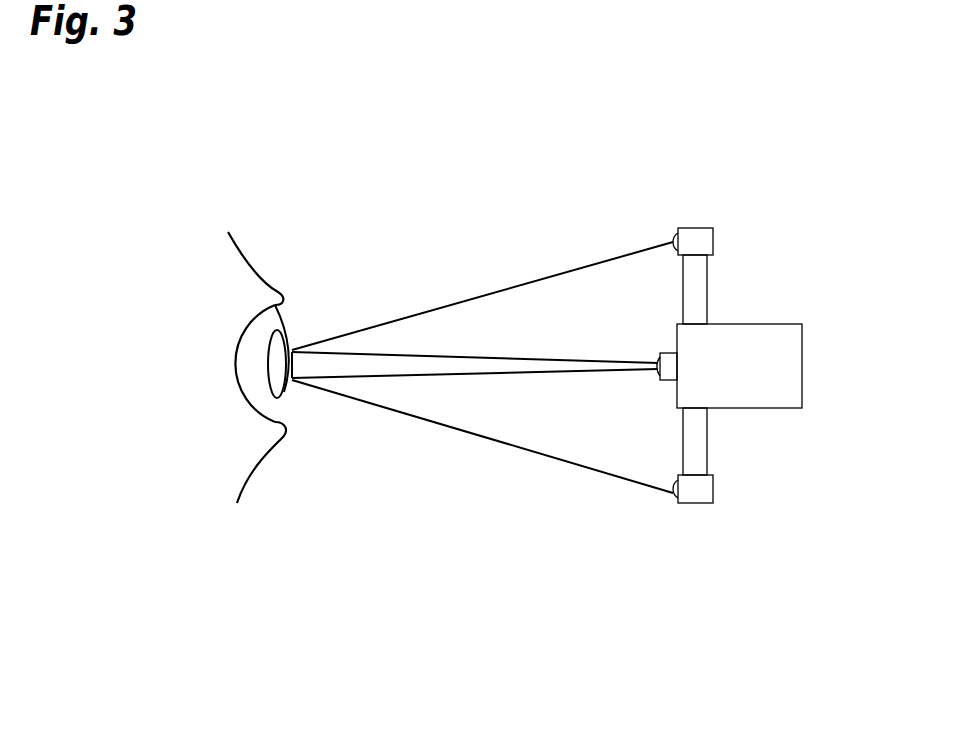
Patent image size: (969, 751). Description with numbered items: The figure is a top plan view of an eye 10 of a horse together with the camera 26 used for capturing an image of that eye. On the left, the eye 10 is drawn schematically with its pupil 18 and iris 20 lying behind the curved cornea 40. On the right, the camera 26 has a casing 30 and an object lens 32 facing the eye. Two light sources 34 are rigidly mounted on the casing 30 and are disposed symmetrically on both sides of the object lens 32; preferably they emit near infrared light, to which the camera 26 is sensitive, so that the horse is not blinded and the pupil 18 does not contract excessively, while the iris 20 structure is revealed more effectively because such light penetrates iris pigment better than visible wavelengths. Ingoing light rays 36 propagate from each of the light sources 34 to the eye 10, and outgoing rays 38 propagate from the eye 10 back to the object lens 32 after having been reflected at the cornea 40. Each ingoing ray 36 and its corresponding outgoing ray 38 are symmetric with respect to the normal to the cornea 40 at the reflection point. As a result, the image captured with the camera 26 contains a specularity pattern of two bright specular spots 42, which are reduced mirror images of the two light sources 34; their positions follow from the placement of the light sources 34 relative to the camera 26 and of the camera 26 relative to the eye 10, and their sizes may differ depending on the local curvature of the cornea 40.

The eye 10 is at (286, 259).
The pupil 18 is at (282, 392).
The iris 20 is at (263, 322).
The camera 26 is at (747, 306).
The casing 30 is at (788, 379).
The object lens 32 is at (658, 371).
The light sources 34 is at (698, 237).
The ingoing light rays 36 is at (493, 290).
The outgoing rays 38 is at (517, 359).
The cornea 40 is at (283, 333).
The specular spots 42 is at (292, 352).